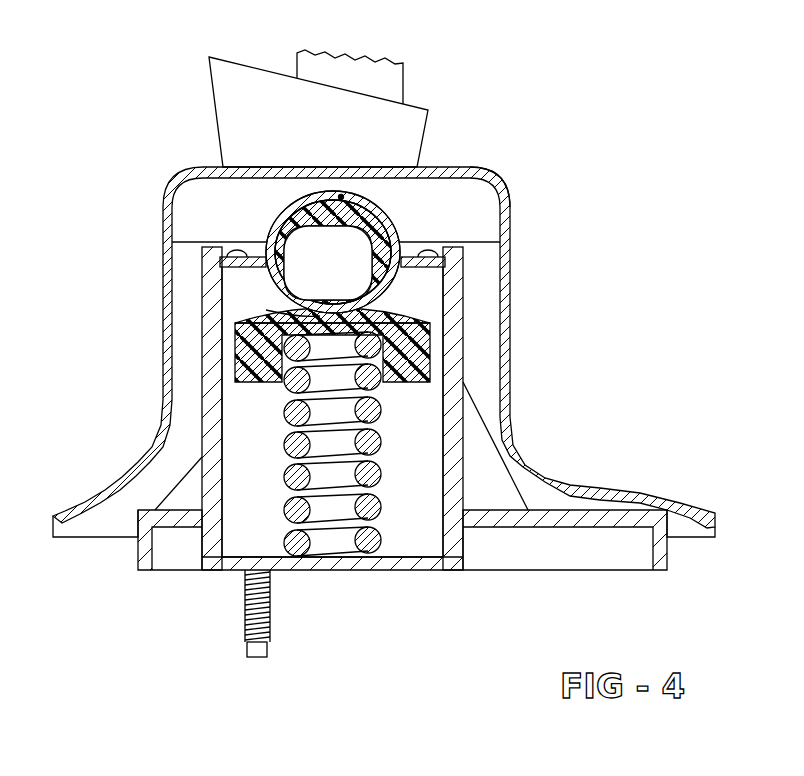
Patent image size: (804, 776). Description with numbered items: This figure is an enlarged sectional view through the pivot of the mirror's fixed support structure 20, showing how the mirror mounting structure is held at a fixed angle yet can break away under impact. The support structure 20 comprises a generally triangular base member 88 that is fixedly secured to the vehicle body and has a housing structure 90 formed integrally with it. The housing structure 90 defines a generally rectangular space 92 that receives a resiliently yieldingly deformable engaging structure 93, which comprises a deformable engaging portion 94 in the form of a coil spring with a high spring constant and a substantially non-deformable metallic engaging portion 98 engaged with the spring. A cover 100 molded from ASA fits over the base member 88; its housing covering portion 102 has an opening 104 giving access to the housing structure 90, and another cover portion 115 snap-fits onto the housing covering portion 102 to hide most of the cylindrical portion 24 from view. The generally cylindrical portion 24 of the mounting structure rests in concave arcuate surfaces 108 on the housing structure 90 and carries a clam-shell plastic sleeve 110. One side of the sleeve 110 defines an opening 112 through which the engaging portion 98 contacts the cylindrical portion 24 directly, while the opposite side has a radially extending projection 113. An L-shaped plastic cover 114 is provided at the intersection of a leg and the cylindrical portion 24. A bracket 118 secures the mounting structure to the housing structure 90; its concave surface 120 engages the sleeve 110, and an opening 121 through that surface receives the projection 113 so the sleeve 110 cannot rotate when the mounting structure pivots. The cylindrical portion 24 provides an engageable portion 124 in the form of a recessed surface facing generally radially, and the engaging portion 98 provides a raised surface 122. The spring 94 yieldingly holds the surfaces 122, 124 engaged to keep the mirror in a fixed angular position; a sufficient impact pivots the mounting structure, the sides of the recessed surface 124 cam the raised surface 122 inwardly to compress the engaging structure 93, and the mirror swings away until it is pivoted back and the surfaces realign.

The fixed support structure 20 is at (607, 393).
The cylindrical portion 24 is at (382, 256).
The base member 88 is at (448, 570).
The housing structure 90 is at (457, 340).
The rectangular space 92 is at (440, 437).
The deformable engaging structure 93 is at (278, 493).
The deformable engaging portion 94 is at (377, 542).
The engaging portion 98 is at (237, 348).
The cover 100 is at (600, 489).
The housing covering portion 102 is at (163, 330).
The opening 104 is at (490, 257).
The concave arcuate surfaces 108 is at (277, 305).
The plastic sleeve 110 is at (262, 256).
The opening 112 is at (380, 310).
The projection 113 is at (327, 195).
The L-shaped plastic cover 114 is at (220, 83).
The cover portion 115 is at (503, 183).
The bracket 118 is at (310, 232).
The concave surface 120 is at (284, 223).
The opening 121 is at (341, 195).
The raised surface 122 is at (317, 294).
The engageable portion 124 is at (385, 328).